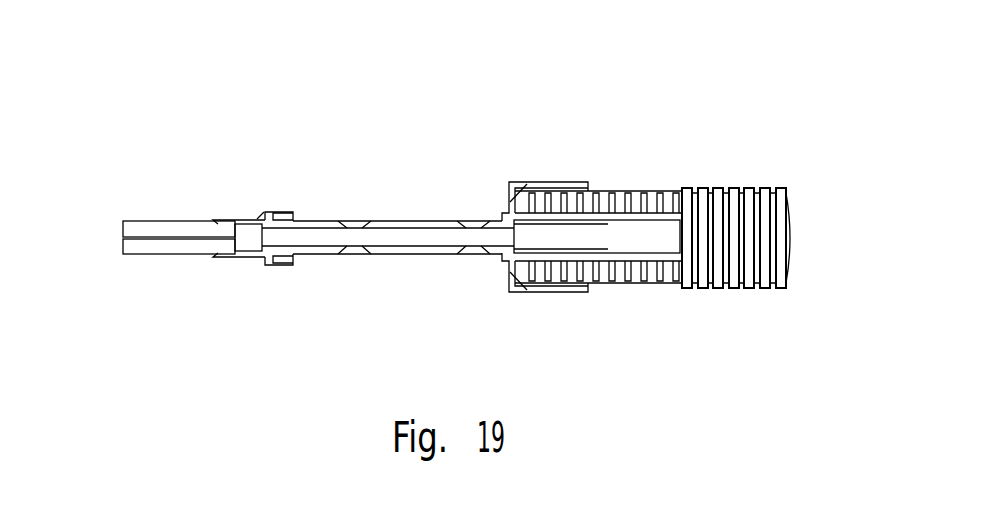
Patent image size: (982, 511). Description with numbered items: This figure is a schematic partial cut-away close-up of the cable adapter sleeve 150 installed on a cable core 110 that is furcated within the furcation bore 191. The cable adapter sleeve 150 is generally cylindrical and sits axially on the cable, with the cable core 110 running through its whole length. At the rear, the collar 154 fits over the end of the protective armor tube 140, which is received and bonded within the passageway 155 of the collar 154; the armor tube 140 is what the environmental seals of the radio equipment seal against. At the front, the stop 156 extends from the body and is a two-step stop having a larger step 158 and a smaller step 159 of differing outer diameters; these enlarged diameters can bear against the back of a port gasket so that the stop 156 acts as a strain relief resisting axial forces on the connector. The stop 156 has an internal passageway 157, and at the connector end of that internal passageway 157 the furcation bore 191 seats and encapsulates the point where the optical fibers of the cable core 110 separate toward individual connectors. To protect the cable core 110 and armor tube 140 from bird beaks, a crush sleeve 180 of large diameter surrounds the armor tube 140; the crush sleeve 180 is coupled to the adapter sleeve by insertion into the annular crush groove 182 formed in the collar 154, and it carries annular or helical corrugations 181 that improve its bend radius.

The cable core 110 is at (234, 235).
The protective armor tube 140 is at (623, 189).
The cable adapter sleeve 150 is at (397, 197).
The collar 154 is at (569, 260).
The passageway 155 is at (535, 281).
The stop 156 is at (296, 196).
The internal passageway 157 is at (388, 267).
The larger step 158 is at (310, 294).
The smaller step 159 is at (216, 276).
The crush sleeve 180 is at (620, 177).
The corrugations 181 is at (744, 206).
The annular crush groove 182 is at (565, 202).
The furcation bore 191 is at (209, 189).